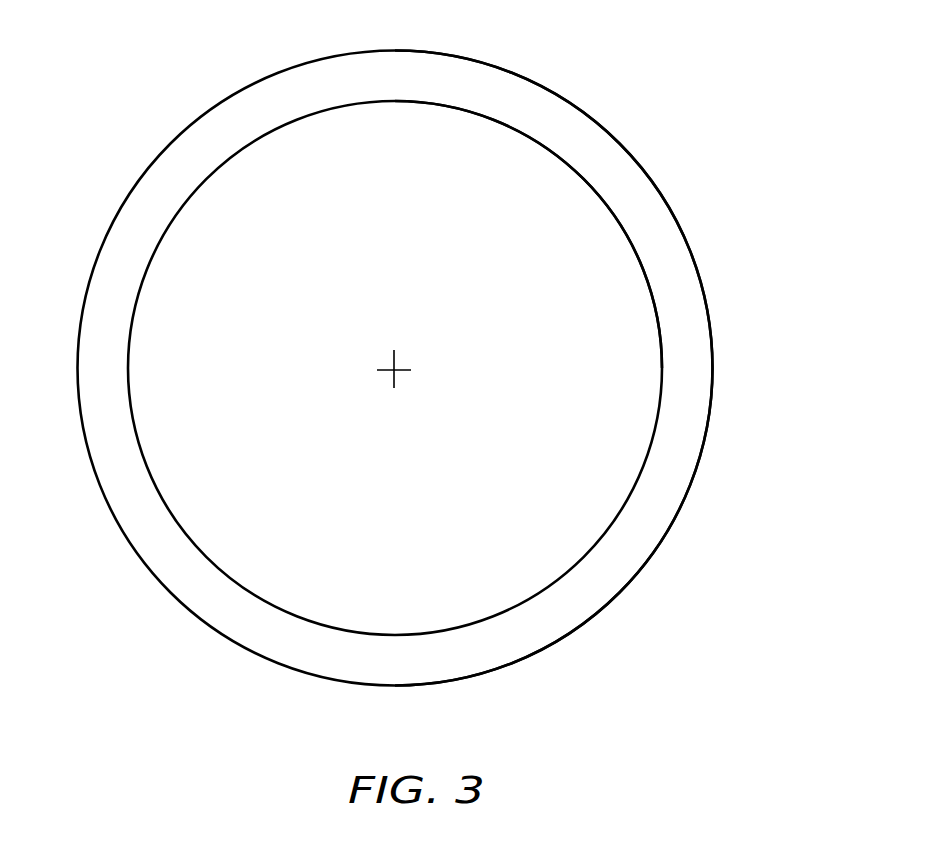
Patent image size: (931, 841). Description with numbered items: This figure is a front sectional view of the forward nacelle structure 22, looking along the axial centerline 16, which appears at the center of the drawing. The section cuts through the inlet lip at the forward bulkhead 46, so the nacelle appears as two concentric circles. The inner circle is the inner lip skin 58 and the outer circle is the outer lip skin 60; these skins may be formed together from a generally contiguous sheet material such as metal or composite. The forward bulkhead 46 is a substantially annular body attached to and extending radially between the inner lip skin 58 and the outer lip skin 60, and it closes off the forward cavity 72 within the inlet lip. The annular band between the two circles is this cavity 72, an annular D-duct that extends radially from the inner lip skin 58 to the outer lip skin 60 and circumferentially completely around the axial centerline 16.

The lens assembly 22 is at (622, 75).
The outer lip skin 60 is at (632, 153).
The forward bulkhead 46 is at (670, 247).
The inner lip skin 58 is at (593, 190).
The forward cavity 72 is at (690, 370).
The axial centerline 16 is at (390, 371).